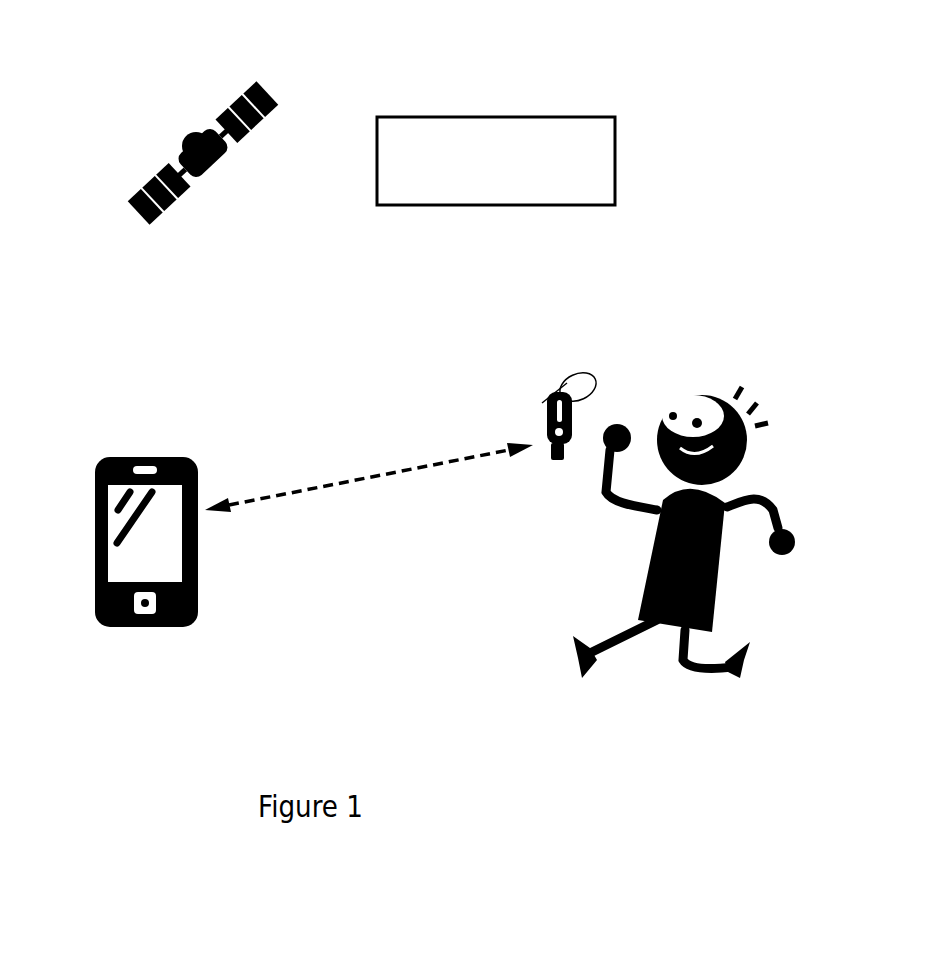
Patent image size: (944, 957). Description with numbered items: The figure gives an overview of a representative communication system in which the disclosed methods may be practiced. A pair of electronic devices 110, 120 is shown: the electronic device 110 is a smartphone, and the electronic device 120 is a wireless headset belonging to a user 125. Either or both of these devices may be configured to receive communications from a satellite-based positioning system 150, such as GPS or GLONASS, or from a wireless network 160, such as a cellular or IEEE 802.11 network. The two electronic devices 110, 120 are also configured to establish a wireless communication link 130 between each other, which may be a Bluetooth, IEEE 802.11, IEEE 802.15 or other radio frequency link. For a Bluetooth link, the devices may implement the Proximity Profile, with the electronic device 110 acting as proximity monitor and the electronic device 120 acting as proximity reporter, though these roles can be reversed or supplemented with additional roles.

The electronic device 110 is at (197, 453).
The electronic device 120 is at (595, 372).
The user 125 is at (768, 387).
The wireless communication link 130 is at (367, 478).
The satellite-based positioning system 150 is at (127, 130).
The wireless network 160 is at (515, 115).